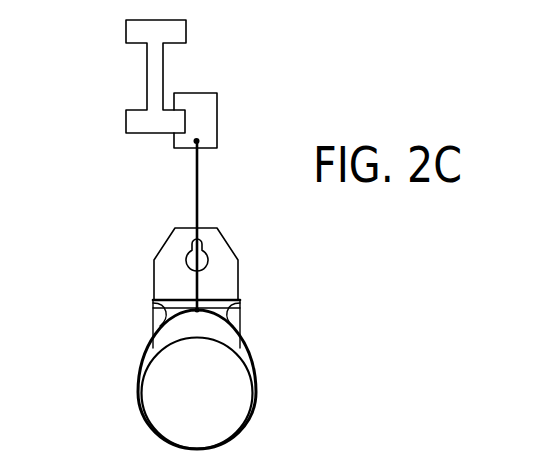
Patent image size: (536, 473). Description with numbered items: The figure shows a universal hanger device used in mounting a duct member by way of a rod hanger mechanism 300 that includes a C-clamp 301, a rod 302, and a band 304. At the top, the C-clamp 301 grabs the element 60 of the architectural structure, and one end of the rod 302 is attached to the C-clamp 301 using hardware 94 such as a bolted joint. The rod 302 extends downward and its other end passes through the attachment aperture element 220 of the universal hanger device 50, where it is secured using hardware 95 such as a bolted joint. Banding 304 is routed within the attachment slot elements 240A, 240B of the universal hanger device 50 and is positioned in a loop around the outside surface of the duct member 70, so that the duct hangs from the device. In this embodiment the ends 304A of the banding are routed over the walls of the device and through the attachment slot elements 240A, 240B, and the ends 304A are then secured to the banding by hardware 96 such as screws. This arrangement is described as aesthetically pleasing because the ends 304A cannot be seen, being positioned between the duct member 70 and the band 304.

The rod hanger mechanism 300 is at (111, 151).
The element of the architectural structure 60 is at (178, 30).
The C-clamp 301 is at (217, 108).
The hardware 94 is at (198, 144).
The rod 302 is at (194, 178).
The universal hanger device 50 is at (224, 248).
The hardware 95 is at (196, 309).
The attachment aperture element 220 is at (200, 308).
The attachment slot element 240A is at (158, 299).
The attachment slot element 240B is at (240, 300).
The ends of the banding 304A is at (152, 317).
The hardware 96 is at (164, 321).
The band 304 is at (254, 383).
The duct member 70 is at (233, 415).